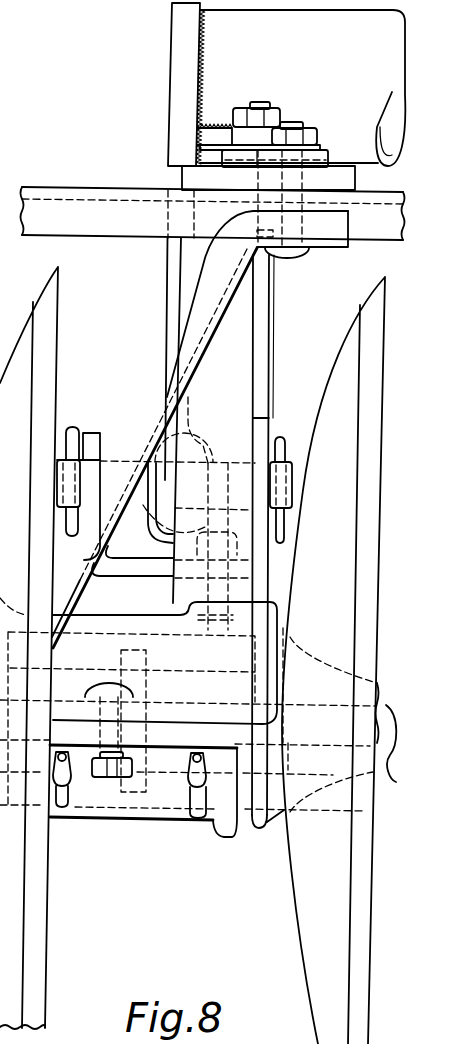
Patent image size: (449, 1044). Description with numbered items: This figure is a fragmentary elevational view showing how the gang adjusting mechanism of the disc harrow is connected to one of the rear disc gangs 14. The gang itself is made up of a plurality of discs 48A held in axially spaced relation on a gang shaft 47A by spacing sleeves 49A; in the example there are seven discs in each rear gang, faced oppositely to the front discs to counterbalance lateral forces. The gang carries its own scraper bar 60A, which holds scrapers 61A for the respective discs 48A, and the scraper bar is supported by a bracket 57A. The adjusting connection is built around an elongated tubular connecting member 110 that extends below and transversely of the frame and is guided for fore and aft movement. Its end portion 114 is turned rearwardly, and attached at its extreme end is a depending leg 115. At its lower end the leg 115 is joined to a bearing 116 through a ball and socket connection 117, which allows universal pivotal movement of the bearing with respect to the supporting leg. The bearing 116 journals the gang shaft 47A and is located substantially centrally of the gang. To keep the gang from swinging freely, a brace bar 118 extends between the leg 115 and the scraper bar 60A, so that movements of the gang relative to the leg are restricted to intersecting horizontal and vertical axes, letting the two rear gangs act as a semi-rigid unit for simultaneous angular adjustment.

The rear disc gang 14 is at (181, 859).
The shaft 47A is at (390, 772).
The disc 48A is at (56, 323).
The spacing sleeve 49A is at (257, 828).
The bracket 57A is at (249, 371).
The scraper bar 60A is at (60, 187).
The scraper 61A is at (205, 292).
The tubular connecting member 110 is at (214, 25).
The end portion 114 is at (222, 57).
The depending leg 115 is at (170, 90).
The bearing 116 is at (132, 617).
The ball and socket connection 117 is at (147, 539).
The brace bar 118 is at (326, 150).